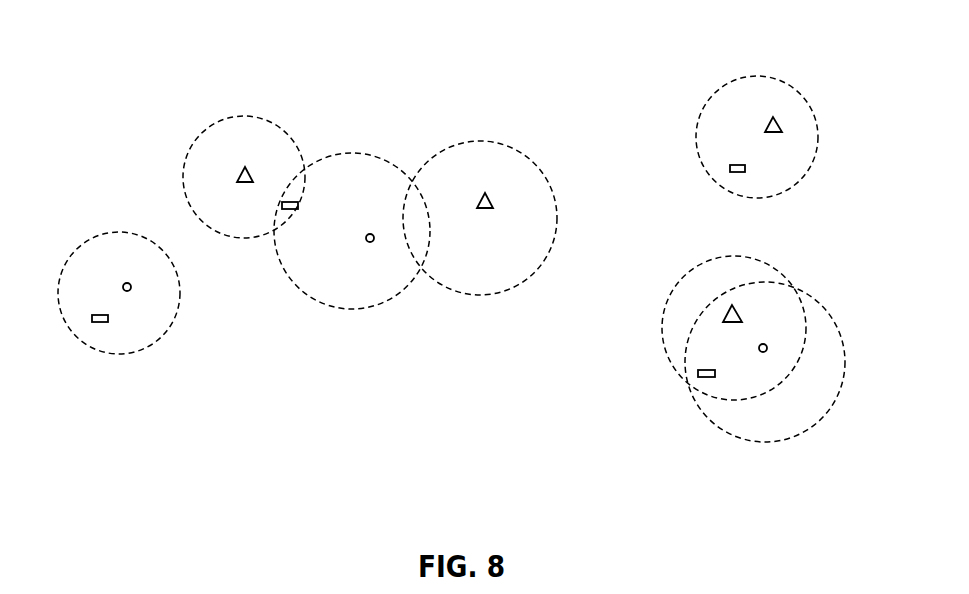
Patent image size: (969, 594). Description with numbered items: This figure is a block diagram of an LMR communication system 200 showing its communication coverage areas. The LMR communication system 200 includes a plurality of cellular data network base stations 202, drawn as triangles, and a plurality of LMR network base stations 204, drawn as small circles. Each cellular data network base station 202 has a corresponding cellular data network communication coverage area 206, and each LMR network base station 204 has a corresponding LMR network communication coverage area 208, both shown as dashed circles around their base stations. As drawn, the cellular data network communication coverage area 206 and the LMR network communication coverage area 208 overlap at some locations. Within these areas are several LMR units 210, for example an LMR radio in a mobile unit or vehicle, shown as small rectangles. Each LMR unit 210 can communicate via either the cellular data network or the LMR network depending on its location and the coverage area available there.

The LMR communication system 200 is at (138, 37).
The cellular data network base station 202 is at (237, 177).
The LMR network base station 204 is at (131, 288).
The cellular data network communication coverage area 206 is at (244, 116).
The LMR network communication coverage area 208 is at (118, 232).
The LMR unit 210 is at (289, 210).